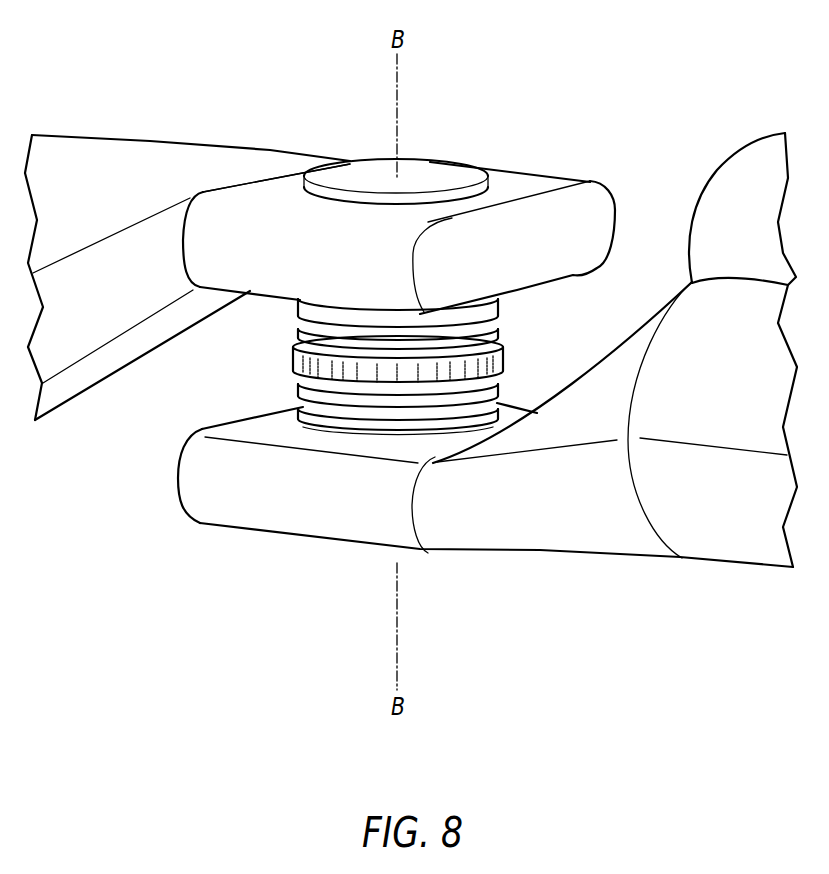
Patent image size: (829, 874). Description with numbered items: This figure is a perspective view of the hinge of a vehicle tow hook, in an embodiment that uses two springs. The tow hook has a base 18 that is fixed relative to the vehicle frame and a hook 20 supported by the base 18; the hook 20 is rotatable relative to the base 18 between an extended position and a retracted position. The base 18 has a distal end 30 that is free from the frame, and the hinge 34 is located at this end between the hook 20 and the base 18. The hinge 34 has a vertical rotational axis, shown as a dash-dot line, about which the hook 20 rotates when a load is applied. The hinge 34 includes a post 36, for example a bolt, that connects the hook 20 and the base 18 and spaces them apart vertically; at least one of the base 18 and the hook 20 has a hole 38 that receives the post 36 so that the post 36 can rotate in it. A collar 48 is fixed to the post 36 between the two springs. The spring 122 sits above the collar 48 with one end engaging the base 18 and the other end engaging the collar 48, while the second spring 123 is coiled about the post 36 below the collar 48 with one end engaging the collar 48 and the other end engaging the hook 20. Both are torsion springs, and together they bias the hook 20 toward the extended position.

The base 18 is at (113, 163).
The hook 20 is at (732, 543).
The distal end 30 is at (578, 220).
The hinge 34 is at (537, 84).
The post 36 is at (358, 173).
The hole 38 is at (308, 200).
The collar 48 is at (294, 358).
The spring 122 is at (297, 314).
The second spring 123 is at (313, 427).